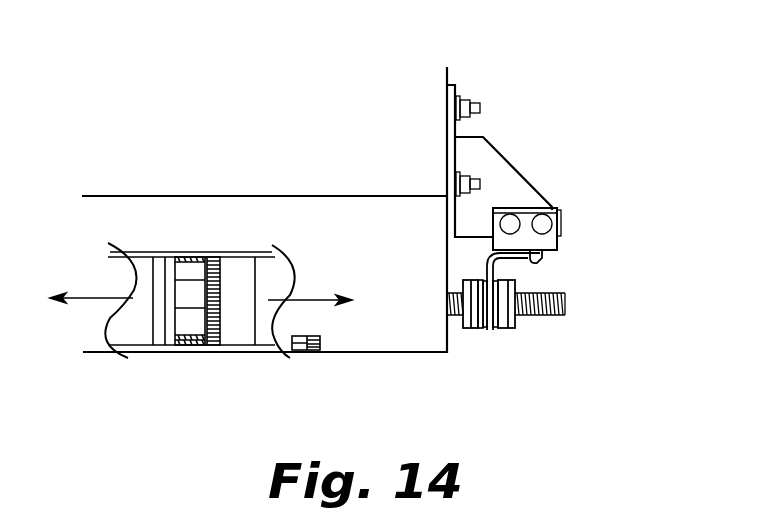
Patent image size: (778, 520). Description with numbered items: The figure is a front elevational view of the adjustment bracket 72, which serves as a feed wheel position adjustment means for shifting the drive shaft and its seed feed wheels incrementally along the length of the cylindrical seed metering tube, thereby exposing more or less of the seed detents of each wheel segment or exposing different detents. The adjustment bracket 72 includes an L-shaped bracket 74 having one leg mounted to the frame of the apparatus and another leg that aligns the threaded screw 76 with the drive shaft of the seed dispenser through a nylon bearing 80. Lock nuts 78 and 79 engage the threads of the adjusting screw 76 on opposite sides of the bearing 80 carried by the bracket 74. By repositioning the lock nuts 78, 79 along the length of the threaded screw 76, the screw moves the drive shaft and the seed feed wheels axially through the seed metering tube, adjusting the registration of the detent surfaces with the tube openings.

The adjustment bracket 72 is at (535, 279).
The L-shaped bracket 74 is at (547, 263).
The threaded screw 76 is at (535, 316).
The lock nut 78 is at (508, 331).
The lock nut 79 is at (470, 331).
The nylon bearing 80 is at (488, 331).